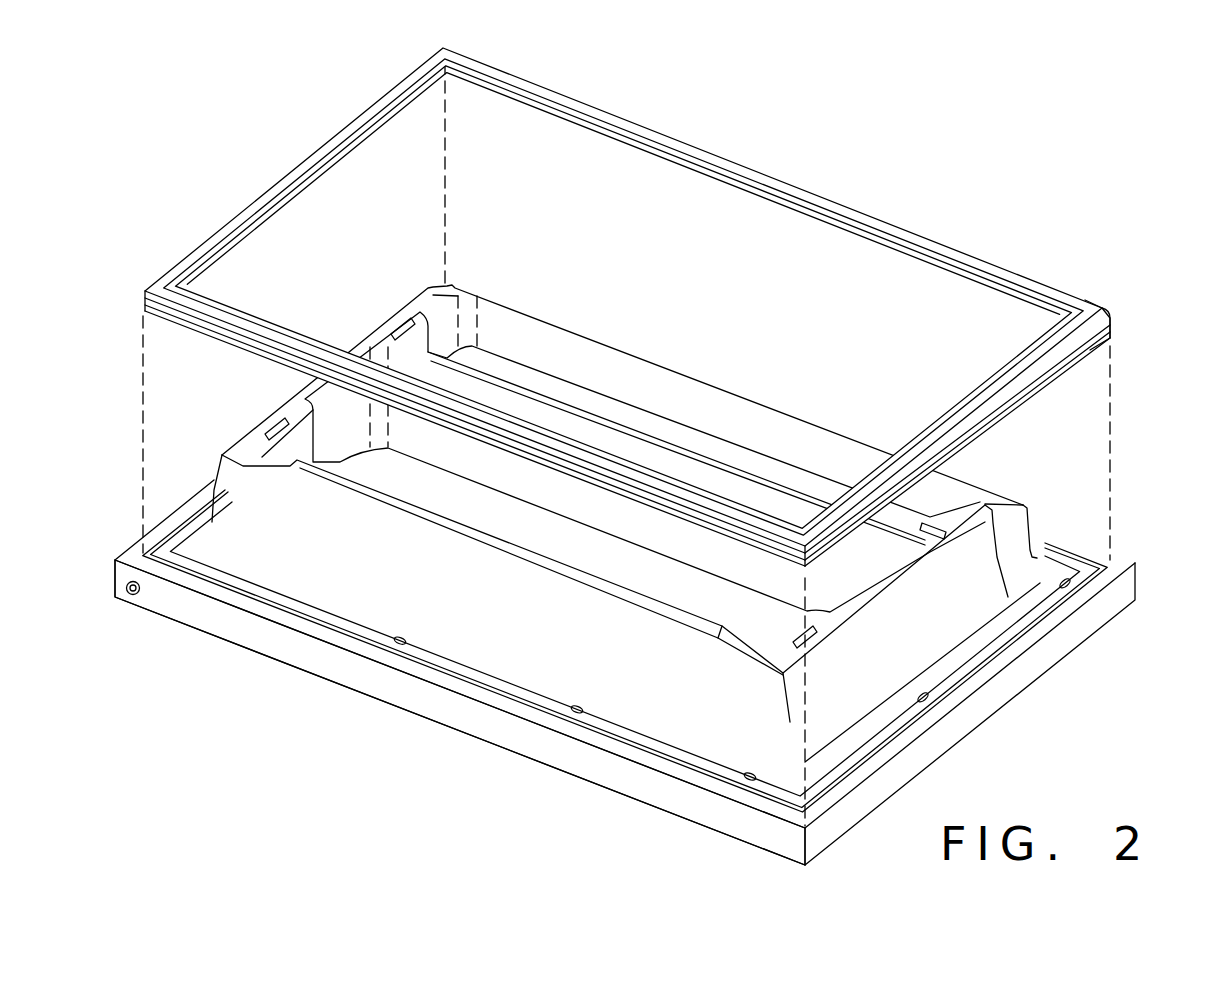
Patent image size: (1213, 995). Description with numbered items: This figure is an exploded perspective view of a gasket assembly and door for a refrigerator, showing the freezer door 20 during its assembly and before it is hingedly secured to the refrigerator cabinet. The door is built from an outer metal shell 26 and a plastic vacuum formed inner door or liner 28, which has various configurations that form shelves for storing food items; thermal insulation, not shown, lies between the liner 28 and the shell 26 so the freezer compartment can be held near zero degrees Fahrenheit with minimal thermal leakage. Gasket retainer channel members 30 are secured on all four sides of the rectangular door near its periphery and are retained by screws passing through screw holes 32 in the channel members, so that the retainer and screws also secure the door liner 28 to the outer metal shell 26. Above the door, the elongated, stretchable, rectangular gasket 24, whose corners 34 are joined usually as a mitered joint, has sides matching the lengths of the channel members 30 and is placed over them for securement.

The freezer door 20 is at (1115, 646).
The gasket 24 is at (740, 152).
The outer metal shell 26 is at (438, 710).
The door liner 28 is at (545, 652).
The gasket retainer channel members 30 is at (640, 740).
The screw holes 32 is at (752, 778).
The corners 34 is at (1088, 308).